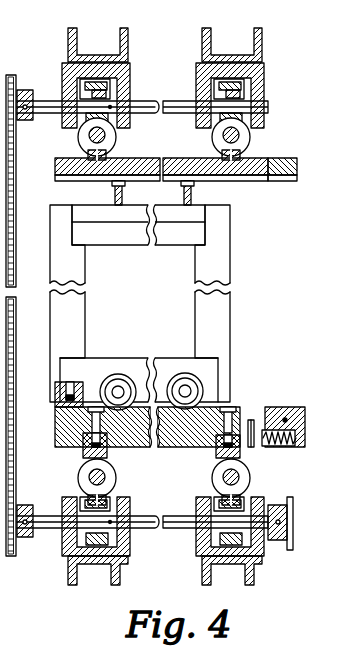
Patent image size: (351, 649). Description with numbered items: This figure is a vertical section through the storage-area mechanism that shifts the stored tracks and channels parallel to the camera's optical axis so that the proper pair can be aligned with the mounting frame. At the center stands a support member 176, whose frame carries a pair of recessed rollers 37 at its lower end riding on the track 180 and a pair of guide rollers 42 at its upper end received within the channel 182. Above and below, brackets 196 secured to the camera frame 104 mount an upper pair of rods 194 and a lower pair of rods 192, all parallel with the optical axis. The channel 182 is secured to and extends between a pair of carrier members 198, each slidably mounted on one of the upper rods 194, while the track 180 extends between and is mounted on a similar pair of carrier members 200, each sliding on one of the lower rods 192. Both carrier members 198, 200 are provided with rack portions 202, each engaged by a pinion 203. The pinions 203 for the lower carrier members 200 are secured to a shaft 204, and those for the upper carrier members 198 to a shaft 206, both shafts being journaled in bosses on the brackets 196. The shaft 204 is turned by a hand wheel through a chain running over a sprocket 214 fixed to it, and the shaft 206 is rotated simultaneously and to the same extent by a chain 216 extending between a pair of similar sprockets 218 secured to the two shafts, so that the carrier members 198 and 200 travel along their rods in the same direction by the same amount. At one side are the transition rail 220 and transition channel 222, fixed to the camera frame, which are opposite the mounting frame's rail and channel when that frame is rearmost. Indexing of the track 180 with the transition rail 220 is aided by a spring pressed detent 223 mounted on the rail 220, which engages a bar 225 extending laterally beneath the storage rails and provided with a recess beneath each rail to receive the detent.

The recessed rollers 37 is at (119, 374).
The guide rollers 42 is at (112, 194).
The camera frame 104 is at (128, 41).
The support member 176 is at (223, 314).
The track 180 is at (187, 446).
The channel 182 is at (207, 182).
The lower rods 192 is at (89, 477).
The upper rods 194 is at (89, 137).
The brackets 196 is at (127, 73).
The carrier members 198 is at (80, 150).
The carrier members 200 is at (116, 464).
The rack portions 202 is at (110, 88).
The pinion 203 is at (118, 128).
The shaft 204 is at (50, 516).
The shaft 206 is at (52, 108).
The sprocket 214 is at (276, 541).
The chain 216 is at (40, 328).
The sprockets 218 is at (24, 89).
The transition rail 220 is at (293, 406).
The transition channel 222 is at (284, 183).
The spring pressed detent 223 is at (262, 446).
The bar 225 is at (258, 424).